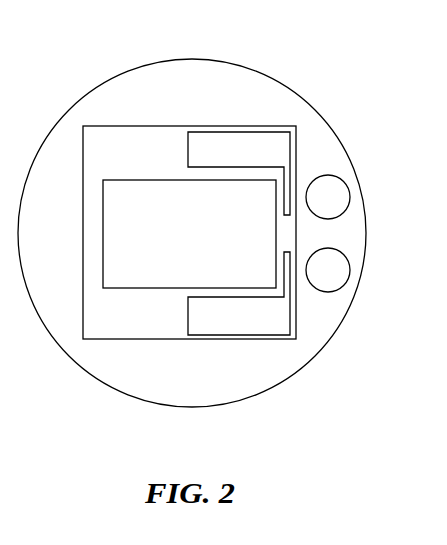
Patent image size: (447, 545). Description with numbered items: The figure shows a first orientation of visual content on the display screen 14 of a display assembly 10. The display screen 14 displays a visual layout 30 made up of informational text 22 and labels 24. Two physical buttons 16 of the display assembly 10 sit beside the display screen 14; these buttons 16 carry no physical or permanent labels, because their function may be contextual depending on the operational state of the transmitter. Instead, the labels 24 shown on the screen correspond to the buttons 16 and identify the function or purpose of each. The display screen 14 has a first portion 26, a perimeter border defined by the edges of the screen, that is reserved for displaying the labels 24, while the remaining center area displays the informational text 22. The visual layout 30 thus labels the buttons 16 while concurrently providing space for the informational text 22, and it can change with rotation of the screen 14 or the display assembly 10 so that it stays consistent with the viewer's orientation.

The display assembly 10 is at (107, 38).
The display screen 14 is at (136, 358).
The buttons 16 is at (343, 200).
The informational text 22 is at (97, 261).
The labels 24 is at (286, 150).
The first portion 26 is at (112, 333).
The visual layout 30 is at (146, 140).